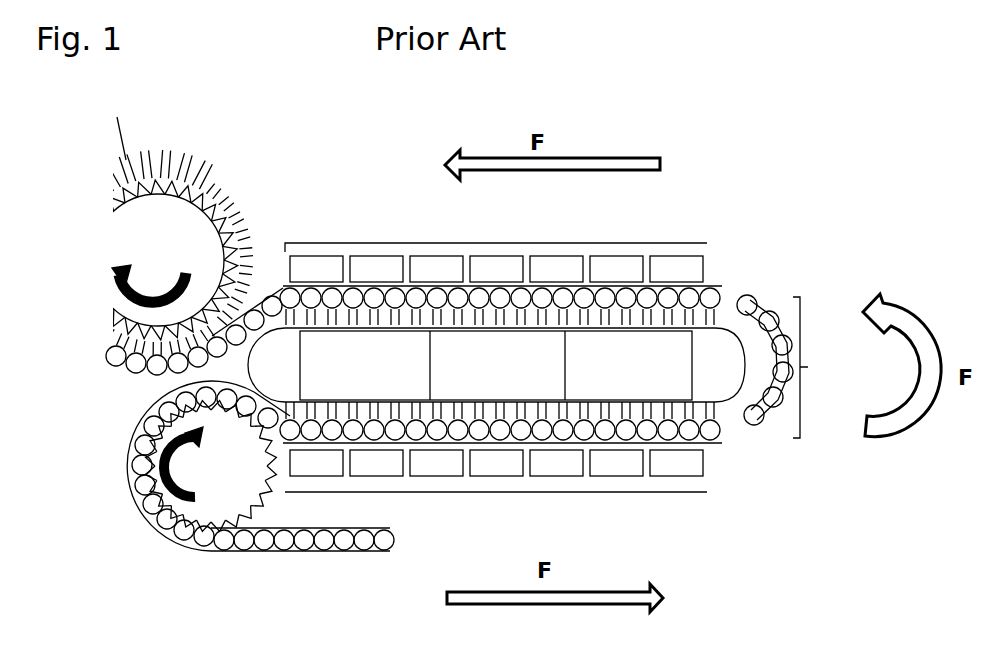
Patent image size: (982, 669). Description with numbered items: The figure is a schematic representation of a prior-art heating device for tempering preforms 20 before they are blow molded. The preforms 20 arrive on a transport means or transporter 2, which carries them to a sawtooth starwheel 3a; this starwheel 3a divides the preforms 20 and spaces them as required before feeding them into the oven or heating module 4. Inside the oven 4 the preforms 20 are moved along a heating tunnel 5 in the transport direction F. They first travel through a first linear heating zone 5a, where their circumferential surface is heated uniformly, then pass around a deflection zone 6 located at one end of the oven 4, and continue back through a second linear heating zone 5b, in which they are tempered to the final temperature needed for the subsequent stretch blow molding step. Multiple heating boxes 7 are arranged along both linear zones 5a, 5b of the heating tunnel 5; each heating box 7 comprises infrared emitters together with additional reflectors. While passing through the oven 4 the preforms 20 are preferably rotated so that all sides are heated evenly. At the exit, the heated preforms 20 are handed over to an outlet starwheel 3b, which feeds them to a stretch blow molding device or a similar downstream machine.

The transport means 2 is at (466, 470).
The preforms 20 is at (773, 413).
The sawtooth starwheel 3a is at (222, 480).
The outlet starwheel 3b is at (170, 272).
The oven 4 is at (496, 365).
The heating tunnel 5 is at (500, 382).
The first linear heating zone 5a is at (497, 492).
The second linear heating zone 5b is at (497, 243).
The deflection zone 6 is at (816, 367).
The heating boxes 7 is at (697, 270).